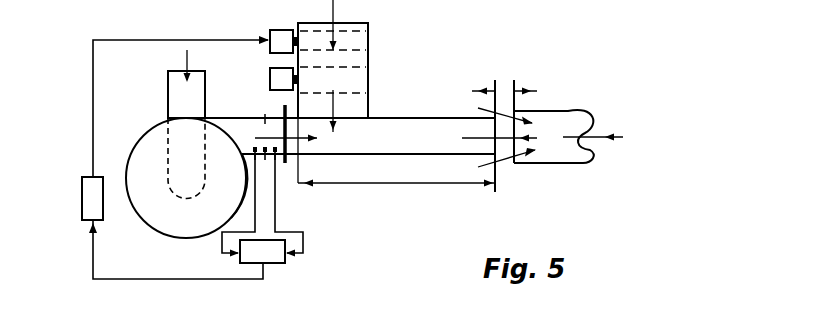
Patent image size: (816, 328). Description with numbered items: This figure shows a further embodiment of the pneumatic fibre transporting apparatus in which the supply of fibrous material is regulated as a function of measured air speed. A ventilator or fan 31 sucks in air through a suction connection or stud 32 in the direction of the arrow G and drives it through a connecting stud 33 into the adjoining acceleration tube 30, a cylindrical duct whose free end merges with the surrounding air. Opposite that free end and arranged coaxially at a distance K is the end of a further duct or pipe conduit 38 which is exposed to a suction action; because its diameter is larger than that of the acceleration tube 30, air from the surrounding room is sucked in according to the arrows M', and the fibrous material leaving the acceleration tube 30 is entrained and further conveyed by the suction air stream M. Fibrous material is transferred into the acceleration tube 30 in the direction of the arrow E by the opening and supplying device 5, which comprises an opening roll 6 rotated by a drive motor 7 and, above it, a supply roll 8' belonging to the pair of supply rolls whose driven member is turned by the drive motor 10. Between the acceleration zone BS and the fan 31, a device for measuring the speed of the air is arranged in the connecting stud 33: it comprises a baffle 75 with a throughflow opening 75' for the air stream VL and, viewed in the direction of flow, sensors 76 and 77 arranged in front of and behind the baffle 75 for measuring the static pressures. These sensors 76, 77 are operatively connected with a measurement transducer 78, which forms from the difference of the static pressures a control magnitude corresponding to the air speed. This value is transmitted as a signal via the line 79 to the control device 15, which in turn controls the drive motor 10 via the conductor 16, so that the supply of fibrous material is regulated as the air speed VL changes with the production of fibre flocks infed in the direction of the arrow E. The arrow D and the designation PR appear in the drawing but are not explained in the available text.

The opening and supplying device 5 is at (368, 23).
The opening roll 6 is at (358, 82).
The drive motor 7 is at (270, 80).
The supply roll 8' is at (361, 34).
The drive motor 10 is at (268, 32).
The control device 15 is at (82, 208).
The conductor 16 is at (93, 137).
The acceleration tube 30 is at (478, 110).
The ventilator or fan 31 is at (160, 237).
The suction connection or stud 32 is at (167, 98).
The connecting stud 33 is at (276, 122).
The further duct or pipe conduit 38 is at (568, 110).
The baffle 75 is at (264, 122).
The throughflow opening 75' is at (262, 111).
The sensor 76 is at (255, 158).
The sensor 77 is at (275, 158).
The measurement transducer 78 is at (277, 258).
The line 79 is at (223, 279).
The arrow G is at (185, 60).
The pressure D is at (334, 17).
The arrow E is at (340, 105).
The distance K is at (505, 90).
The suction air stream M is at (601, 115).
The arrows M' is at (526, 161).
The air speed VL is at (317, 139).
The acceleration zone BS is at (452, 183).
The reference pressure PR is at (620, 208).